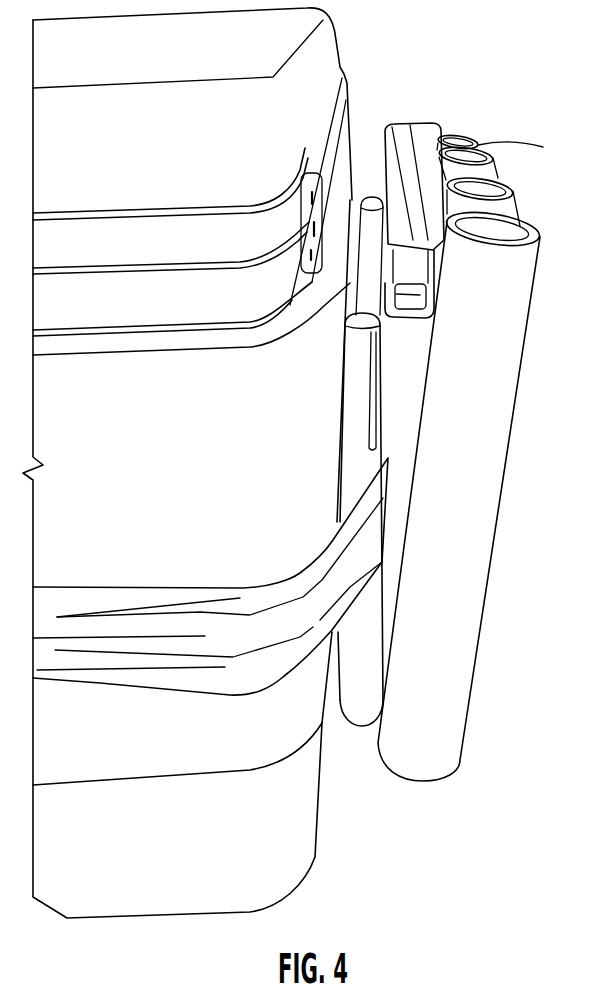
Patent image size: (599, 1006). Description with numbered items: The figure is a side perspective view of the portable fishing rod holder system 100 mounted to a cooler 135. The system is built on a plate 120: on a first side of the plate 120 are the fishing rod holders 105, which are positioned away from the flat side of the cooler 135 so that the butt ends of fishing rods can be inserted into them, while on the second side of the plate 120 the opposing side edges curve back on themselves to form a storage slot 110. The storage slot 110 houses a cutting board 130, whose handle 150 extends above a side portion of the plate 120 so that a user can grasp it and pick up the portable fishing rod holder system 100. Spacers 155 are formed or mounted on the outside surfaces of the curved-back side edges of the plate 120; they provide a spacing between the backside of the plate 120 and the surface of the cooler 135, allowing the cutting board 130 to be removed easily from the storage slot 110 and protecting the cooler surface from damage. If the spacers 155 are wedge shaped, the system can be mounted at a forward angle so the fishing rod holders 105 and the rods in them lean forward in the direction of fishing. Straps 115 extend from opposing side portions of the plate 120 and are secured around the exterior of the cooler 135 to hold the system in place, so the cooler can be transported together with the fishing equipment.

The portable fishing rod holder system 100 is at (471, 78).
The fishing rod holders 105 is at (517, 233).
The storage slot 110 is at (410, 313).
The straps 115 is at (245, 590).
The plate 120 is at (420, 383).
The cutting board 130 is at (405, 282).
The cooler 135 is at (345, 67).
The handle 150 is at (417, 128).
The spacers 155 is at (375, 200).